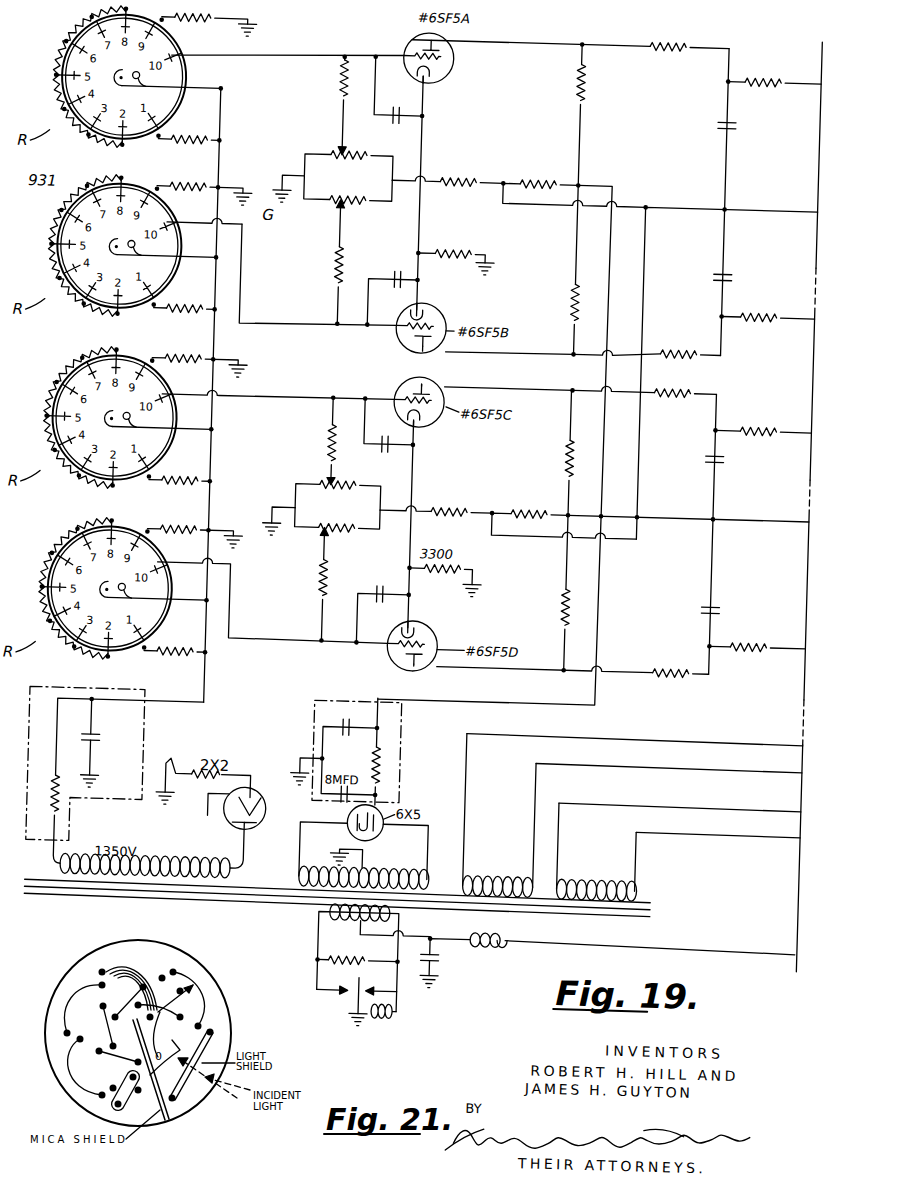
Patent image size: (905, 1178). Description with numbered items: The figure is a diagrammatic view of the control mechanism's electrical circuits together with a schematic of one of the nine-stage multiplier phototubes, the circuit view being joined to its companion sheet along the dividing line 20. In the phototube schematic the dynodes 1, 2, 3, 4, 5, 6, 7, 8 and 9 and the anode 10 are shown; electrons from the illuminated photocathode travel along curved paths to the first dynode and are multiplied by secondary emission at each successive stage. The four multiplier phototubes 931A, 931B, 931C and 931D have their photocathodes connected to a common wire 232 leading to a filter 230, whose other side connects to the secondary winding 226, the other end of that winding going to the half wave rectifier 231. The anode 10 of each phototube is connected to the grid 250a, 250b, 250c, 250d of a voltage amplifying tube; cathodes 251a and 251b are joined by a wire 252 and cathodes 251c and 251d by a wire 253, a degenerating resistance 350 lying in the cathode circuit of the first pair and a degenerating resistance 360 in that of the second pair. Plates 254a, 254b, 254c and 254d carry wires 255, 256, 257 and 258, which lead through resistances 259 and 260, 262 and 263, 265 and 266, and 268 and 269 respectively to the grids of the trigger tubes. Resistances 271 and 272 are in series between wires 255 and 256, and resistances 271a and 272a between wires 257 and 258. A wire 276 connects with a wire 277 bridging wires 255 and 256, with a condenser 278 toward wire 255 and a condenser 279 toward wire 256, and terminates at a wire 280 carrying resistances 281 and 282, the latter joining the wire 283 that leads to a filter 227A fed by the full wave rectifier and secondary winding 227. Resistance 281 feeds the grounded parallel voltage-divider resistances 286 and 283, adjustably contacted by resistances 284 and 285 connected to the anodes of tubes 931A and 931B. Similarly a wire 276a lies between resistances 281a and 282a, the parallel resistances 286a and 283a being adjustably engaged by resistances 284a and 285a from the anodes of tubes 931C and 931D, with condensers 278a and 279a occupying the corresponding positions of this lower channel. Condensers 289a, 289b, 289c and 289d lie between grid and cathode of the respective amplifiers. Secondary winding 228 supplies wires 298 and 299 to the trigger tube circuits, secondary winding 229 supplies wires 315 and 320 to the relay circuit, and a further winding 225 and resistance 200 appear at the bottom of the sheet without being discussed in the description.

In FIG. 19, the multiplier photoelectric tube 931A is at (160, 80).
In FIG. 19, the multiplier photoelectric tube 931B is at (158, 216).
In FIG. 19, the multiplier photoelectric tube 931C is at (110, 413).
In FIG. 19, the multiplier photoelectric tube 931D is at (105, 583).
In FIG. 19, the plate 254a is at (411, 45).
In FIG. 19, the plate 254b is at (404, 350).
In FIG. 19, the plate 254c is at (401, 386).
In FIG. 19, the plate 254d is at (404, 660).
In FIG. 19, the grid 250a is at (440, 61).
In FIG. 19, the grid 250b is at (396, 333).
In FIG. 19, the grid 250c is at (443, 412).
In FIG. 19, the grid 250d is at (425, 642).
In FIG. 19, the cathode 251a is at (432, 75).
In FIG. 19, the cathode 251b is at (417, 314).
In FIG. 19, the cathode 251c is at (428, 425).
In FIG. 19, the cathode 251d is at (418, 617).
In FIG. 19, the wire 252 is at (412, 143).
In FIG. 19, the wire 253 is at (415, 481).
In FIG. 19, the wire 255 is at (445, 41).
In FIG. 19, the wire 256 is at (482, 353).
In FIG. 19, the wire 257 is at (500, 388).
In FIG. 19, the wire 258 is at (515, 670).
In FIG. 19, the resistance unit 259 is at (668, 48).
In FIG. 19, the resistance unit 260 is at (765, 82).
In FIG. 19, the resistance 262 is at (686, 352).
In FIG. 19, the resistance 263 is at (758, 312).
In FIG. 19, the resistance 265 is at (684, 383).
In FIG. 19, the resistance 266 is at (755, 428).
In FIG. 19, the resistance 268 is at (668, 664).
In FIG. 19, the resistance 269 is at (752, 644).
In FIG. 19, the resistance 271 is at (575, 96).
In FIG. 19, the resistance 271a is at (562, 476).
In FIG. 19, the resistance 272 is at (571, 303).
In FIG. 19, the resistance 272a is at (562, 615).
In FIG. 19, the wire 276 is at (646, 199).
In FIG. 19, the wire 276a is at (637, 285).
In FIG. 19, the wire 277 is at (714, 143).
In FIG. 19, the condenser 278 is at (721, 122).
In FIG. 19, the condenser 278a is at (710, 457).
In FIG. 19, the condenser 279 is at (708, 272).
In FIG. 19, the condenser 279a is at (705, 603).
In FIG. 19, the wire 280 is at (485, 178).
In FIG. 19, the resistance 281 is at (465, 191).
In FIG. 19, the resistance 281a is at (463, 520).
In FIG. 19, the resistance 282 is at (521, 203).
In FIG. 19, the resistance 282a is at (522, 522).
In FIG. 19, the wire 283 is at (328, 215).
In FIG. 19, the resistance 283a is at (318, 533).
In FIG. 19, the resistance 284 is at (334, 108).
In FIG. 19, the resistance 284a is at (329, 424).
In FIG. 19, the resistance 285 is at (335, 262).
In FIG. 19, the resistance 285a is at (327, 563).
In FIG. 19, the resistance 286 is at (328, 155).
In FIG. 19, the resistance 286a is at (317, 480).
In FIG. 19, the condenser 289a is at (383, 110).
In FIG. 19, the condenser 289b is at (388, 274).
In FIG. 19, the condenser 289c is at (381, 434).
In FIG. 19, the condenser 289d is at (383, 600).
In FIG. 19, the degenerating resistance 350 is at (478, 260).
In FIG. 19, the degenerating resistance 360 is at (463, 568).
In FIG. 19, the dividing line 20 is at (806, 512).
In FIG. 19, the common wire 232 is at (208, 707).
In FIG. 19, the filter 230 is at (149, 746).
In FIG. 19, the half wave rectifier 231 is at (268, 830).
In FIG. 19, the secondary winding 226 is at (230, 868).
In FIG. 19, the secondary winding 227 is at (393, 875).
In FIG. 19, the filter 227A is at (405, 738).
In FIG. 19, the transformer secondary 228 is at (499, 879).
In FIG. 19, the transformer secondary winding 229 is at (602, 880).
In FIG. 19, the wire 298 is at (623, 735).
In FIG. 19, the wire 299 is at (660, 765).
In FIG. 19, the wire 315 is at (655, 802).
In FIG. 19, the wire 320 is at (685, 829).
In FIG. 19, the transformer winding 225 is at (329, 935).
In FIG. 19, the resistor 200 is at (357, 951).
In FIG. 21, the dynode 1 is at (193, 999).
In FIG. 21, the dynode 2 is at (159, 1015).
In FIG. 21, the dynode 3 is at (131, 976).
In FIG. 21, the dynode 4 is at (129, 1002).
In FIG. 21, the dynode 5 is at (81, 1009).
In FIG. 21, the dynode 6 is at (103, 1026).
In FIG. 21, the dynode 7 is at (82, 1067).
In FIG. 21, the dynode 8 is at (118, 1060).
In FIG. 21, the dynode 9 is at (141, 1105).
In FIG. 21, the anode 10 is at (126, 1091).